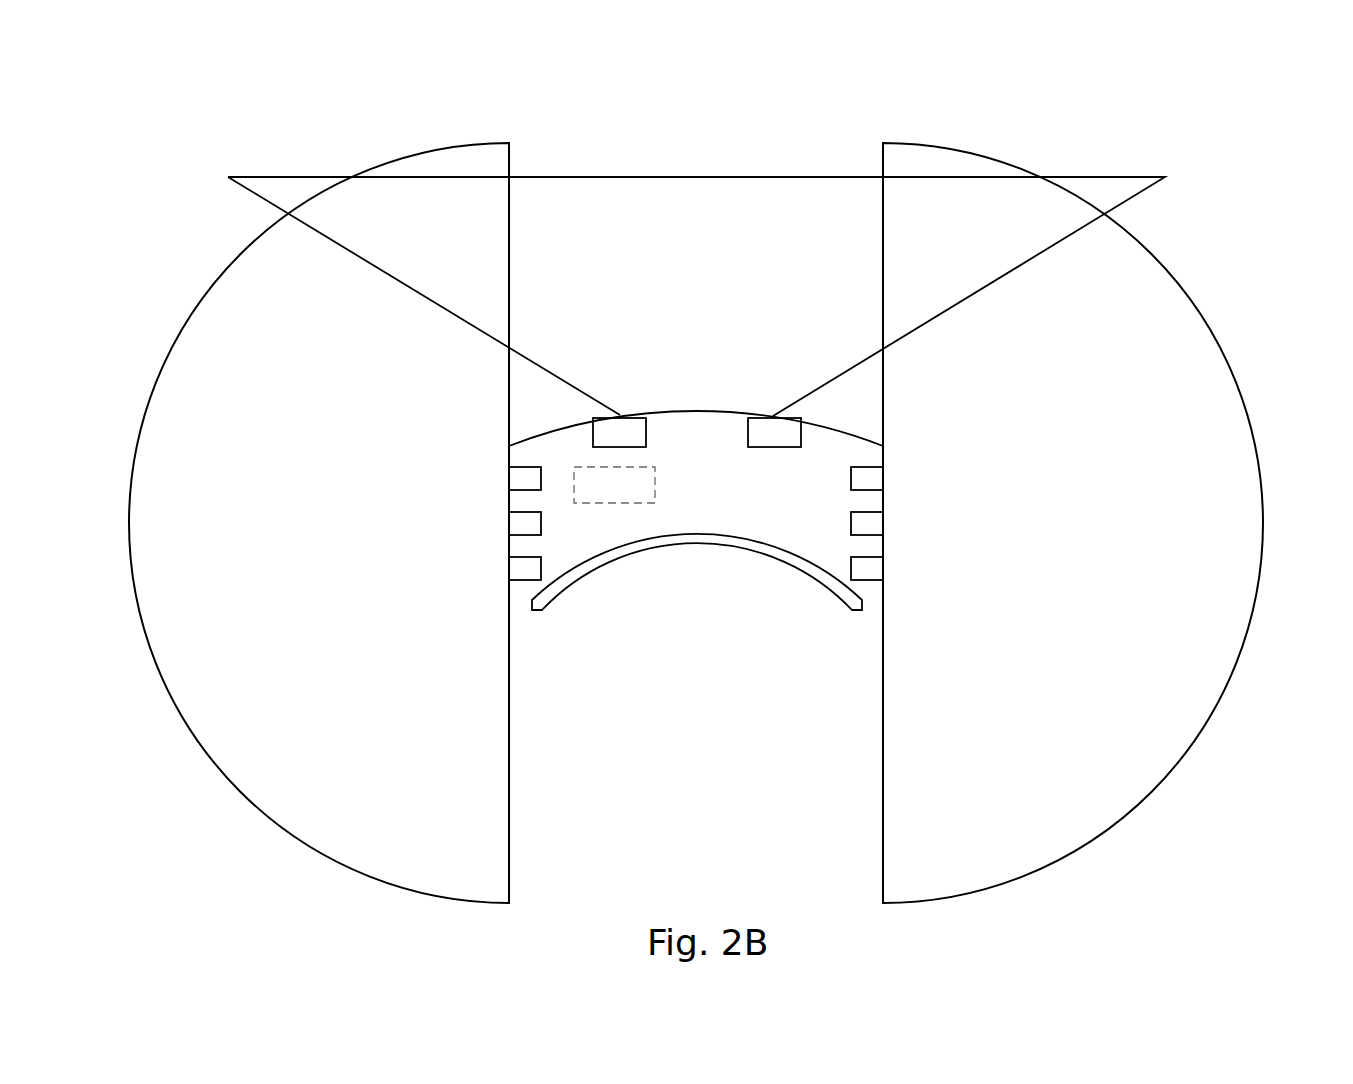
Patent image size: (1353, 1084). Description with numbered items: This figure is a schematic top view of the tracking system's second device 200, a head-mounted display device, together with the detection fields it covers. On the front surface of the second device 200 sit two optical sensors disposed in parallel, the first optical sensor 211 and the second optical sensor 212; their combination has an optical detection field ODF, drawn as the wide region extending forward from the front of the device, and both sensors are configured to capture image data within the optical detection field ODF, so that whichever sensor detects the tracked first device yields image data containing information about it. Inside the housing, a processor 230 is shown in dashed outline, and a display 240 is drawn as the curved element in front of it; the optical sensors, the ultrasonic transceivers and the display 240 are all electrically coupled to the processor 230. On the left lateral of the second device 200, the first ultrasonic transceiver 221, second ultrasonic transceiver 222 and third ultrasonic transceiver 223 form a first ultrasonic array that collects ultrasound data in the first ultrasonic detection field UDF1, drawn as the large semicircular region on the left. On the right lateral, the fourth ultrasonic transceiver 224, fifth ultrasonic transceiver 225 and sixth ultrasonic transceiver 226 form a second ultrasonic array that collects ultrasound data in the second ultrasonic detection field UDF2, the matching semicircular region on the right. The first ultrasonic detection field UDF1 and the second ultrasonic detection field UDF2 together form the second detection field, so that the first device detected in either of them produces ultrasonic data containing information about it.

The second device 200 is at (696, 607).
The first optical sensor 211 is at (646, 430).
The second optical sensor 212 is at (748, 430).
The first ultrasonic transceiver 221 is at (541, 478).
The second ultrasonic transceiver 222 is at (541, 523).
The third ultrasonic transceiver 223 is at (541, 568).
The fourth ultrasonic transceiver 224 is at (851, 478).
The fifth ultrasonic transceiver 225 is at (851, 523).
The sixth ultrasonic transceiver 226 is at (851, 568).
The processor 230 is at (628, 503).
The display 240 is at (757, 545).
The optical detection field ODF is at (687, 212).
The first ultrasonic detection field UDF1 is at (262, 323).
The second ultrasonic detection field UDF2 is at (1170, 320).